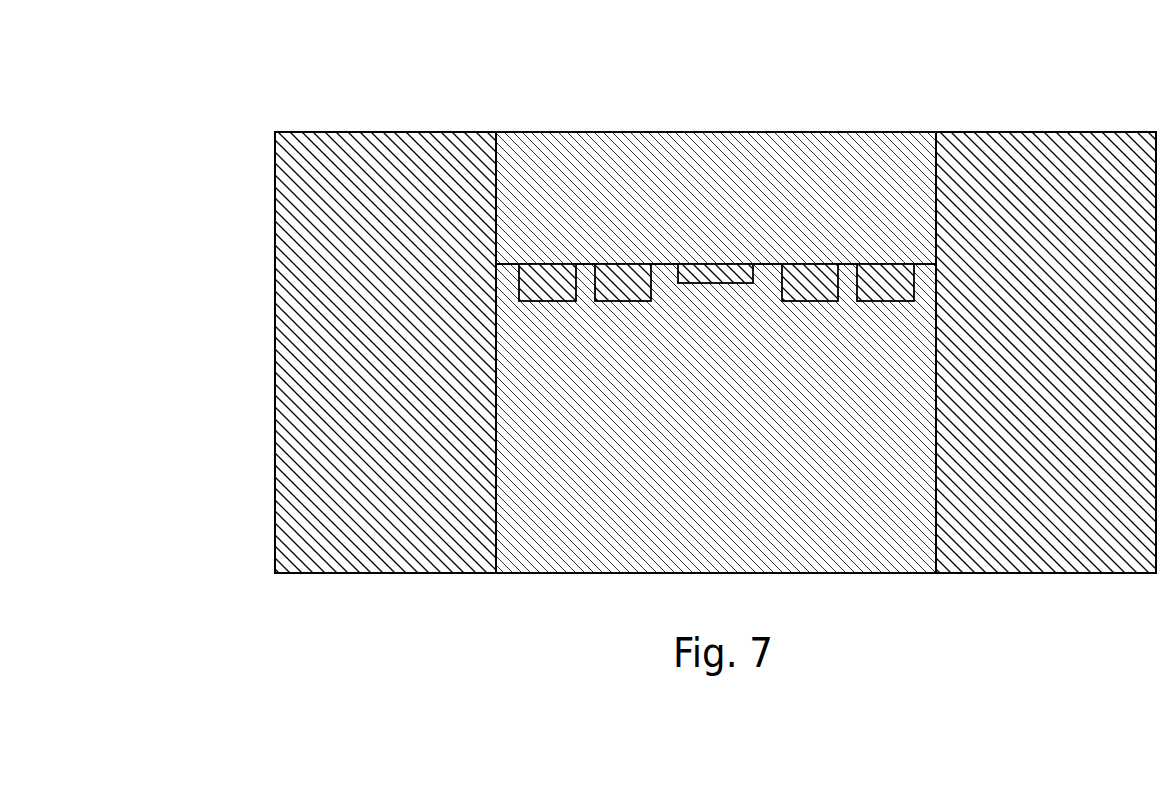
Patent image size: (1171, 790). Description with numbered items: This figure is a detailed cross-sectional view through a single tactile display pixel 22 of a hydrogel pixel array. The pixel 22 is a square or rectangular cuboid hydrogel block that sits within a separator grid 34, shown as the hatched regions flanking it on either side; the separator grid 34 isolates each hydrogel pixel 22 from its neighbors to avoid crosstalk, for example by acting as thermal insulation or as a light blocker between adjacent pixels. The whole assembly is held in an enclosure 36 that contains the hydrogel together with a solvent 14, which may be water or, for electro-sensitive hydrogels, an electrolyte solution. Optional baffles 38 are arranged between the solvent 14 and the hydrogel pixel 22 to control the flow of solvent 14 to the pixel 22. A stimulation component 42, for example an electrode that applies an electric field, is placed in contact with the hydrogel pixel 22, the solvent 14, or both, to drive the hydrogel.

The solvent 14 is at (833, 507).
The pixel 22 is at (657, 163).
The separator grid 34 is at (1027, 168).
The enclosure 36 is at (267, 544).
The baffles 38 is at (873, 285).
The stimulation component 42 is at (724, 273).